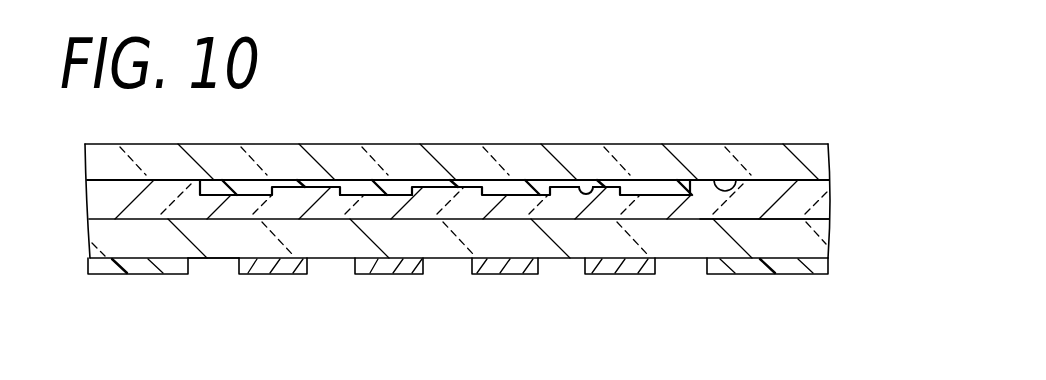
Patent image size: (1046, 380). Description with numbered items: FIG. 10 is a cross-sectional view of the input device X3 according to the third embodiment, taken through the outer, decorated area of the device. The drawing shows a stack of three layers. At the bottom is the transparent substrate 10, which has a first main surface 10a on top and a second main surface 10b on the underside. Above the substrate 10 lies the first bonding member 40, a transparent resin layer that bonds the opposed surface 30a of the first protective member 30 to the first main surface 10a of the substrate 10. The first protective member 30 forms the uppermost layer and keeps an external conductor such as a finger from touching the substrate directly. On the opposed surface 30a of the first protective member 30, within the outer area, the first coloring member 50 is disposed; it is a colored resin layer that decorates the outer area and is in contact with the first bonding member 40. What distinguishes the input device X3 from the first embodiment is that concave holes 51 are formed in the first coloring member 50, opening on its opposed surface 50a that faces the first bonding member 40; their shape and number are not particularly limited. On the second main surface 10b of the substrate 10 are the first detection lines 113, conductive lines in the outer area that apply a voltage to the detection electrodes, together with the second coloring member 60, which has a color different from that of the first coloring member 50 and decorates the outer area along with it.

The substrate 10 is at (815, 238).
The first main surface 10a is at (770, 205).
The second main surface 10b is at (215, 260).
The first protective member 30 is at (808, 159).
The opposed surface 30a is at (710, 180).
The first bonding member 40 is at (815, 197).
The first coloring member 50 is at (360, 180).
The opposed surface 50a is at (375, 196).
The concave holes 51 is at (593, 181).
The second coloring member 60 is at (143, 274).
The first detection lines 113 is at (277, 270).
The input device X3 is at (727, 77).